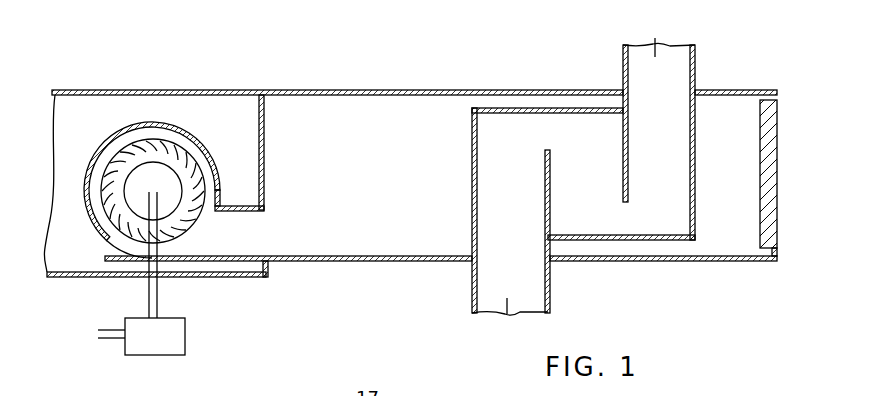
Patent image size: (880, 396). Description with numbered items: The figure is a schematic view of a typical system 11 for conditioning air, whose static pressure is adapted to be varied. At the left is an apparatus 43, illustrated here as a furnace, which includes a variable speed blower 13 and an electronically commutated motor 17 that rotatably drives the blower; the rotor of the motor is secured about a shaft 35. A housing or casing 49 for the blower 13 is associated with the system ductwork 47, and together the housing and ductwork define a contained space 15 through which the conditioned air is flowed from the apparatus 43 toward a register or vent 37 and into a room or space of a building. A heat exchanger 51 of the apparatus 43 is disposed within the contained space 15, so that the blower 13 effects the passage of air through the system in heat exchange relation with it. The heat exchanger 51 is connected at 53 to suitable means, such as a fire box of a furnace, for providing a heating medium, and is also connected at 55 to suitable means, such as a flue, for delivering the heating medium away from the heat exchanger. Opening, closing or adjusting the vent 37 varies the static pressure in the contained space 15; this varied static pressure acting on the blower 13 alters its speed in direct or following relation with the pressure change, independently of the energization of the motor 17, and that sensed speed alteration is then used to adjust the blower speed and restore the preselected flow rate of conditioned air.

The system 11 is at (423, 66).
The variable speed blower 13 is at (192, 226).
The contained space 15 is at (370, 172).
The electronically commutated motor 17 is at (135, 174).
The shaft 35 is at (187, 337).
The register or vent 37 is at (772, 100).
The apparatus 43 is at (98, 251).
The ductwork 47 is at (168, 90).
The housing or casing 49 is at (207, 147).
The heat exchanger 51 is at (593, 185).
The heat exchanger connection to heating medium supply 53 is at (506, 317).
The heat exchanger connection to flue 55 is at (655, 40).